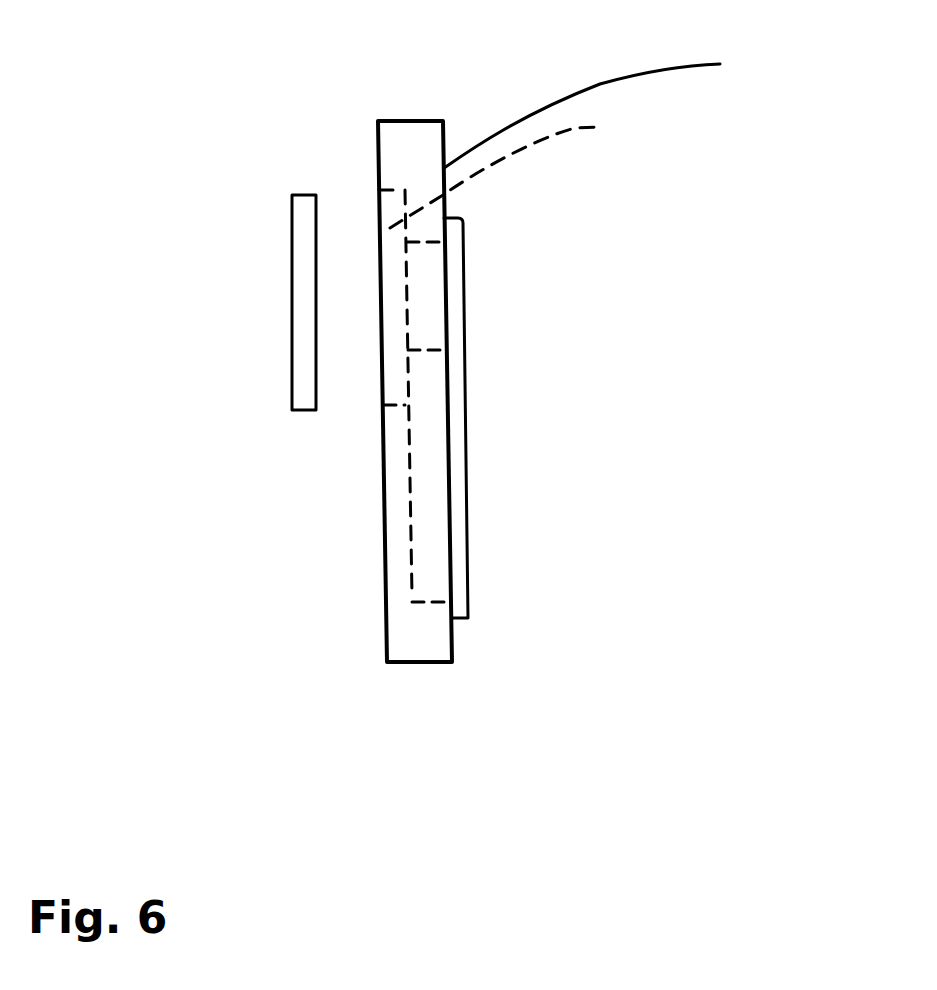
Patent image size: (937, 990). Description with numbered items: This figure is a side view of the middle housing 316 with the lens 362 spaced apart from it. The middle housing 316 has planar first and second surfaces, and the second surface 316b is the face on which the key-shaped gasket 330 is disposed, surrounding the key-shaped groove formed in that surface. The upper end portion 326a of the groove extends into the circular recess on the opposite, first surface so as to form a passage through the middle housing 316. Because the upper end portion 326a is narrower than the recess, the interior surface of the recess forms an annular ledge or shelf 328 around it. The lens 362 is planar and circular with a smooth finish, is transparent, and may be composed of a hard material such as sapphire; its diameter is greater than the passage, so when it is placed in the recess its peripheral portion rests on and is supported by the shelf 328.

The middle housing 316 is at (476, 127).
The second surface 316b is at (630, 106).
The upper end portion of the groove 326a is at (538, 169).
The annular ledge or shelf 328 is at (395, 384).
The key-shaped gasket 330 is at (452, 280).
The lens 362 is at (305, 195).